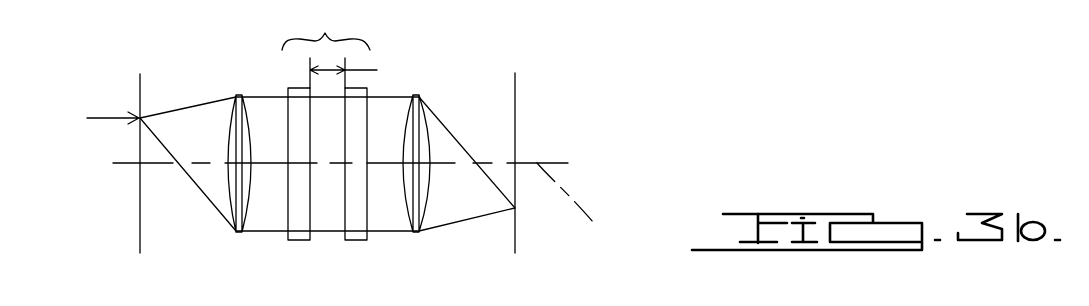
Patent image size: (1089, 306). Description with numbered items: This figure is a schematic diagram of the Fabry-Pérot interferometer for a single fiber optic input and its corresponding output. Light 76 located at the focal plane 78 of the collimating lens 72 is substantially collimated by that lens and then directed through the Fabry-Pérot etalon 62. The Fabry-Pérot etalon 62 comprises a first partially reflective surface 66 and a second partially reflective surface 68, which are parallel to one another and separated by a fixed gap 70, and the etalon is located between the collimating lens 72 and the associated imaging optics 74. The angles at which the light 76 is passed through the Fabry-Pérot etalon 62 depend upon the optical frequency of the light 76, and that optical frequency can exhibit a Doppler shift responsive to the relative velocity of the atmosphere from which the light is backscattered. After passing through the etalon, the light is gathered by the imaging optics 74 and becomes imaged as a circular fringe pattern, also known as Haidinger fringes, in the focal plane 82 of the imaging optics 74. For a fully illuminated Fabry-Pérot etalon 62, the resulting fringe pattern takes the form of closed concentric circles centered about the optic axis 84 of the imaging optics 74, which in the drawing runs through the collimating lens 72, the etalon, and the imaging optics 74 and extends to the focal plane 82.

The Fabry-Pérot etalon 62 is at (326, 28).
The first partially reflective surface 66 is at (310, 223).
The second partially reflective surface 68 is at (345, 223).
The fixed gap 70 is at (360, 73).
The collimating lens 72 is at (231, 112).
The imaging optics 74 is at (425, 110).
The light 76 is at (99, 118).
The focal plane of the collimating lens 78 is at (140, 222).
The focal plane of the imaging optics 82 is at (515, 115).
The optic axis 84 is at (582, 202).